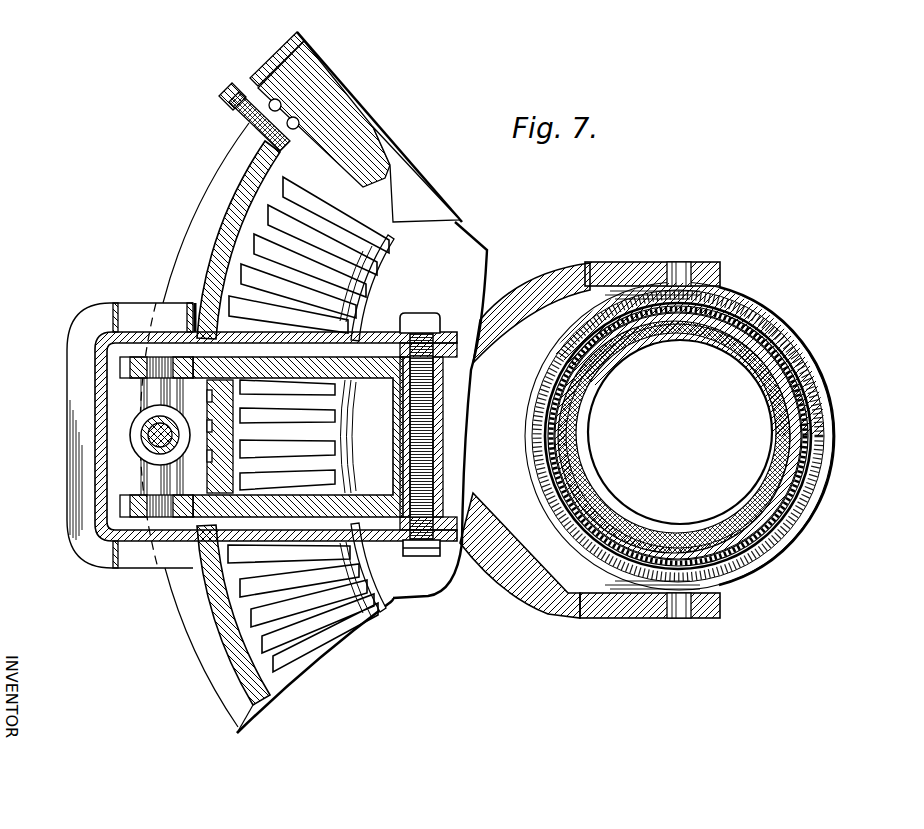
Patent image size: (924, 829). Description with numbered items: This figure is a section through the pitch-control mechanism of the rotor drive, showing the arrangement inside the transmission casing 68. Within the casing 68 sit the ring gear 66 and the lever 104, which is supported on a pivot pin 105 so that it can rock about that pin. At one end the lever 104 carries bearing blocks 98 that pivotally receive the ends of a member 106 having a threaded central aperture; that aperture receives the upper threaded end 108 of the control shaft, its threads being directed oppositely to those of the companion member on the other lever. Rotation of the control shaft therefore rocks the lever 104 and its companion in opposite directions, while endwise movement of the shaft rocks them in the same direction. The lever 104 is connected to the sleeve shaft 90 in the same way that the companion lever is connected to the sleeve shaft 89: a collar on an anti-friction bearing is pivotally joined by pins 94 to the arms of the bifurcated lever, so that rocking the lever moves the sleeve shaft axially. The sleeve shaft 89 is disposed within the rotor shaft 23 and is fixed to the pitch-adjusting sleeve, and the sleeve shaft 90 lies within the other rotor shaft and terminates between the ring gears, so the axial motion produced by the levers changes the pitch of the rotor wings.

The shaft 23 is at (772, 366).
The ring gear 66 is at (247, 618).
The transmission casing 68 is at (232, 222).
The sleeve shaft 89 is at (785, 416).
The sleeve shaft 90 is at (795, 367).
The pins 94 is at (679, 262).
The bearing blocks 98 is at (138, 357).
The lever 104 is at (542, 596).
The pivot pin 105 is at (432, 312).
The member 106 is at (137, 452).
The upper threaded end 108 is at (158, 436).